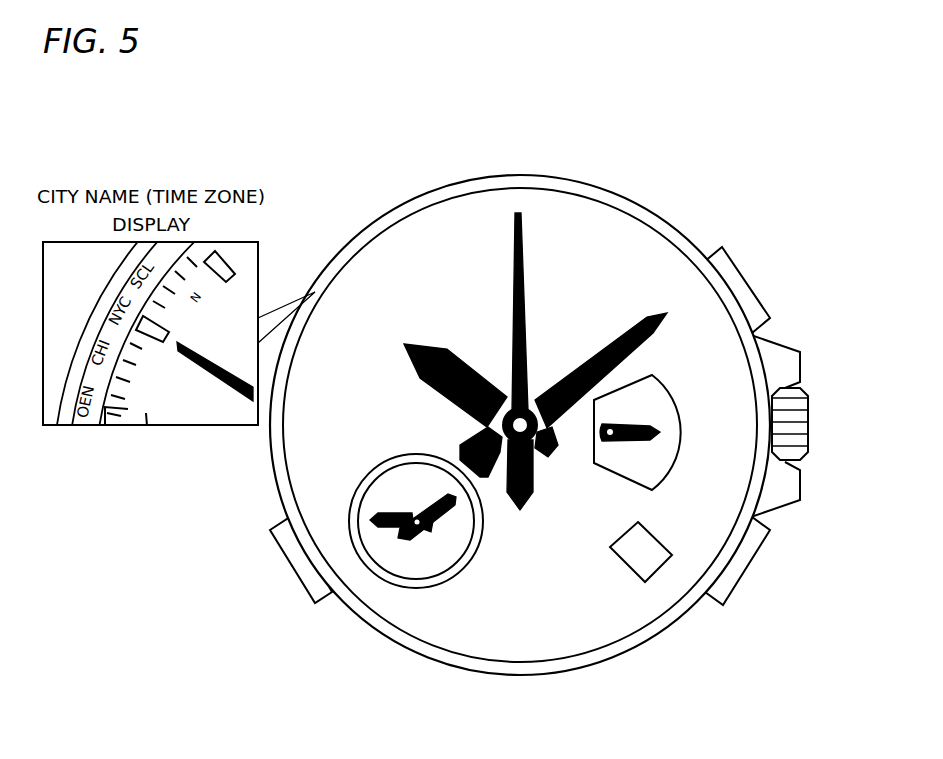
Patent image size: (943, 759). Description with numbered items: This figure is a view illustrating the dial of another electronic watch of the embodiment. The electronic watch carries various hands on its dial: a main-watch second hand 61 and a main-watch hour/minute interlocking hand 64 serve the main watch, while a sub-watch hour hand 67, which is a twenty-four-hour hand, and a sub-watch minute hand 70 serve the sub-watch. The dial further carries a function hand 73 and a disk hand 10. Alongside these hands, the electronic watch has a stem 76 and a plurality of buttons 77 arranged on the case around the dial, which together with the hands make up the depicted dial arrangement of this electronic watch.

The disk hand 10 is at (622, 567).
The main-watch second hand 61 is at (527, 262).
The main-watch hour/minute interlocking hand 64 is at (456, 354).
The sub-watch hour hand 67 is at (386, 524).
The sub-watch minute hand 70 is at (451, 508).
The function hand 73 is at (652, 375).
The stem 76 is at (808, 400).
The buttons 77 is at (740, 268).